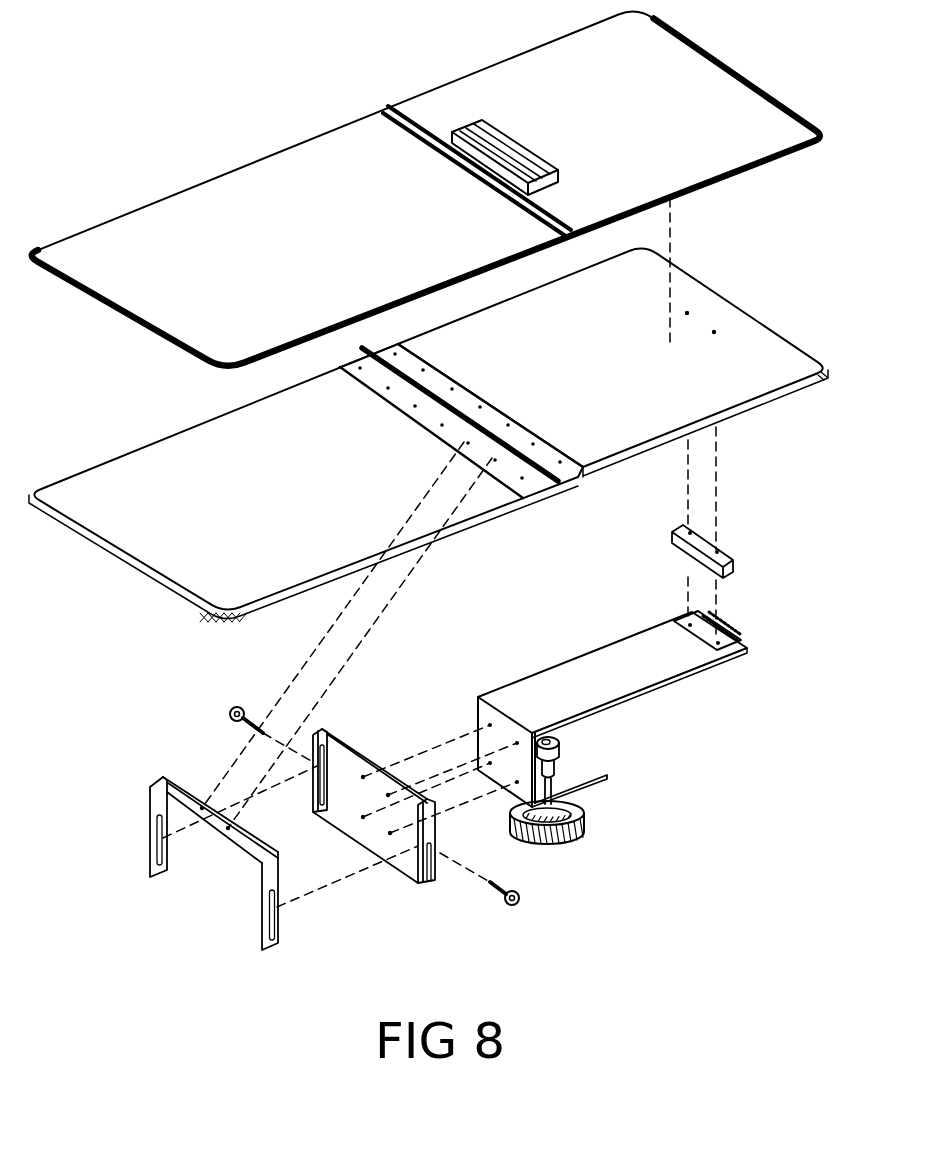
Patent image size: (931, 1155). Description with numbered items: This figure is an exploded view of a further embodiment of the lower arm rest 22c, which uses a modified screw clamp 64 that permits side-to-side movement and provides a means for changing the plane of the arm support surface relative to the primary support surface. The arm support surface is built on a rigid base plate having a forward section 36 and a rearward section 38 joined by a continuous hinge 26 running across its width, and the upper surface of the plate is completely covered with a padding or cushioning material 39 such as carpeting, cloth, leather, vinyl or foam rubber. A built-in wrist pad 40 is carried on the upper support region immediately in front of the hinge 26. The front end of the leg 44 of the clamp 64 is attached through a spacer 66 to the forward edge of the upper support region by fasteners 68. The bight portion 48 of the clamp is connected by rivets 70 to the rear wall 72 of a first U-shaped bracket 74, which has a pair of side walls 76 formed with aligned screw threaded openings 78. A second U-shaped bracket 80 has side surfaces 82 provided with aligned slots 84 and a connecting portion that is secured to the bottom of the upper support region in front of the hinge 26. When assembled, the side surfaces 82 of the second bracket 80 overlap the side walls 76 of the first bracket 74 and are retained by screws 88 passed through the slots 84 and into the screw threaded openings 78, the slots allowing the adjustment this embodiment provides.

The arm rest 22c is at (87, 407).
The continuous hinge 26 is at (451, 388).
The forward section 36 is at (690, 392).
The rearward section 38 is at (158, 535).
The padding or cushioning material 39 is at (467, 93).
The built-in wrist pad 40 is at (503, 147).
The leg 44 is at (670, 645).
The bight portion 48 is at (484, 715).
The screw clamp 64 is at (663, 737).
The spacer 66 is at (726, 557).
The fasteners 68 is at (714, 332).
The rivets 70 is at (389, 793).
The rear wall 72 is at (364, 733).
The first U-shaped bracket 74 is at (341, 753).
The side walls 76 is at (326, 806).
The screw threaded openings 78 is at (322, 767).
The second U-shaped bracket 80 is at (148, 762).
The side surfaces 82 is at (163, 877).
The slots 84 is at (163, 842).
The screws 88 is at (237, 706).